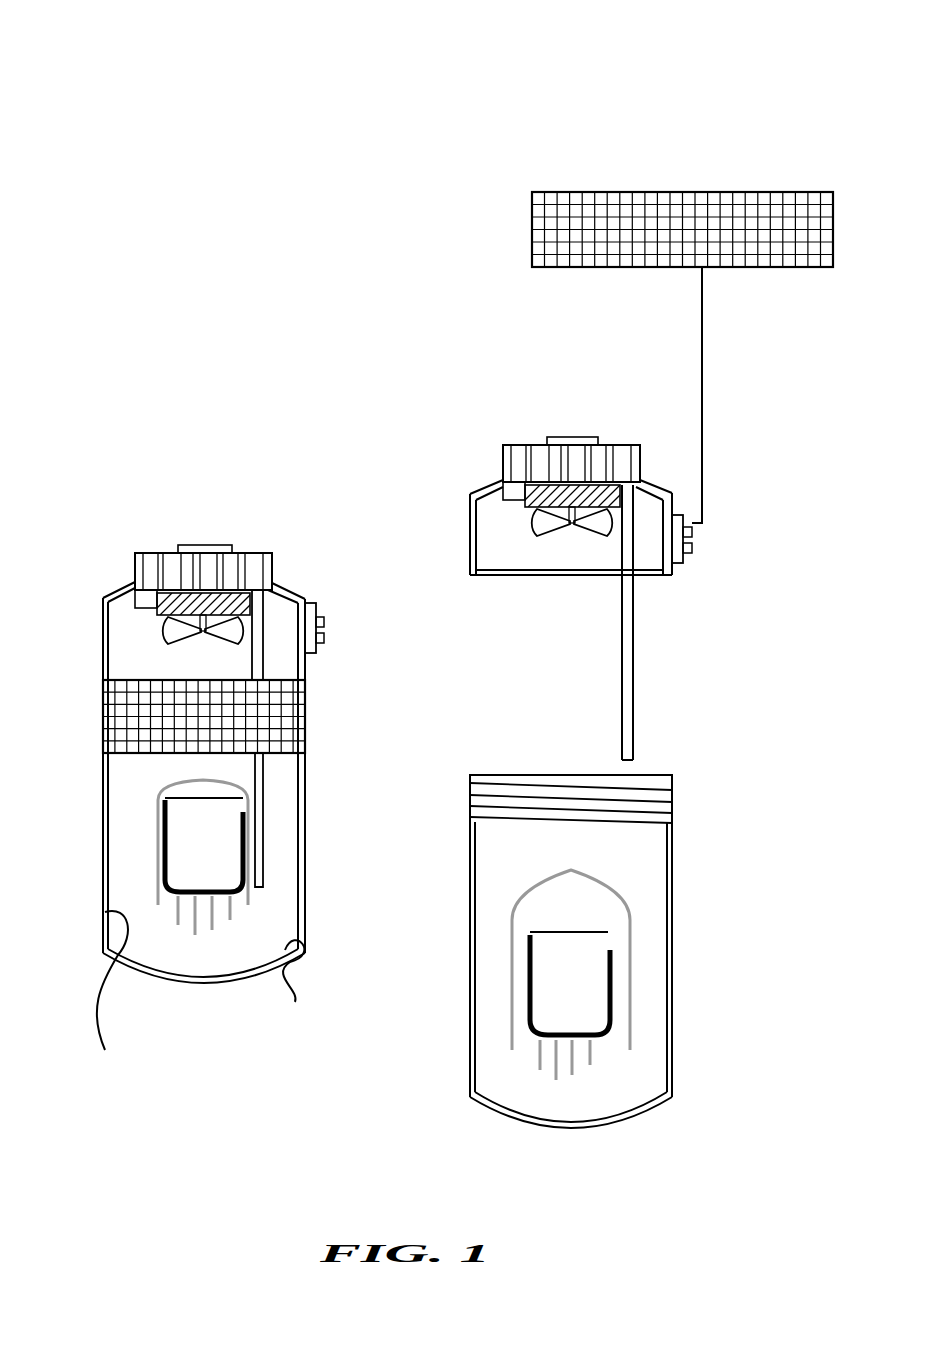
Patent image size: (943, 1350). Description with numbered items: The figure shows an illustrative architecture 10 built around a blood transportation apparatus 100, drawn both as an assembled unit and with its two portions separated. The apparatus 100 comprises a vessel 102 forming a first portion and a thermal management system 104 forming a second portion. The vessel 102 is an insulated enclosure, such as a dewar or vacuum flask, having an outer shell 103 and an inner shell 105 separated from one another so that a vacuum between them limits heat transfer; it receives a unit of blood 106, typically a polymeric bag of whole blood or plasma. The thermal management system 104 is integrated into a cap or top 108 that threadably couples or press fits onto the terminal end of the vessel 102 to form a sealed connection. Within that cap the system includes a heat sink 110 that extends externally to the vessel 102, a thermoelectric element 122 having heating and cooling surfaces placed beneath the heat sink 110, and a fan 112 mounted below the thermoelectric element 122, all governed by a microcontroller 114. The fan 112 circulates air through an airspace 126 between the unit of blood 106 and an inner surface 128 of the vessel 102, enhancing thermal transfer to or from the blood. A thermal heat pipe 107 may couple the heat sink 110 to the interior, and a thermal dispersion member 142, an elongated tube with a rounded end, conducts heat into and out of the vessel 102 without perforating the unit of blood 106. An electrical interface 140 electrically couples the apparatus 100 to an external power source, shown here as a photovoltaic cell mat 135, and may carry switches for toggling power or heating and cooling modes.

The illustrative architecture 10 is at (156, 27).
The blood transportation apparatus 100 is at (87, 448).
The vessel 102 is at (103, 652).
The outer shell 103 is at (304, 942).
The thermal management system 104 is at (100, 568).
The inner shell 105 is at (291, 986).
The unit of blood 106 is at (162, 825).
The thermal heat pipe 107 is at (633, 620).
The cap or top 108 is at (292, 582).
The heat sink 110 is at (237, 548).
The fan 112 is at (538, 523).
The microcontroller 114 is at (513, 490).
The thermoelectric element 122 is at (545, 497).
The airspace 126 is at (294, 800).
The inner surface 128 is at (121, 996).
The photovoltaic cell mat 135 is at (105, 700).
The electrical interface 140 is at (687, 558).
The thermal dispersion member 142 is at (568, 437).